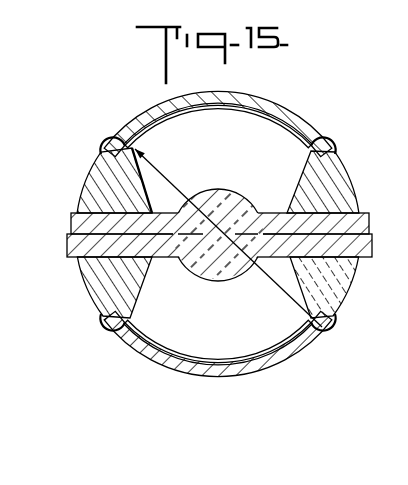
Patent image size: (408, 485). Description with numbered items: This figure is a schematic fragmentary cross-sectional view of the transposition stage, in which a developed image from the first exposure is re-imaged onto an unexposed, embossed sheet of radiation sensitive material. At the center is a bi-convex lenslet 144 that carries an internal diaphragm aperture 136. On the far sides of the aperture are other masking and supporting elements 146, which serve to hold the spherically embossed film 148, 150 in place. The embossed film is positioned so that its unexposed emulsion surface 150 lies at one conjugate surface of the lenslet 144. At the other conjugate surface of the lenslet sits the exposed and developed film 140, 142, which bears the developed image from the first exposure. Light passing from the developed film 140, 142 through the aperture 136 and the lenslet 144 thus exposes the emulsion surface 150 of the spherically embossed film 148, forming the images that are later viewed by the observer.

The internal diaphragm aperture 136 is at (250, 202).
The exposed and developed film 140 is at (217, 377).
The exposed and developed film 142 is at (211, 357).
The bi-convex lenslet 144 is at (225, 190).
The masking and supporting elements 146 is at (97, 158).
The spherically embossed film 148 is at (257, 96).
The unexposed emulsion surface 150 is at (212, 112).